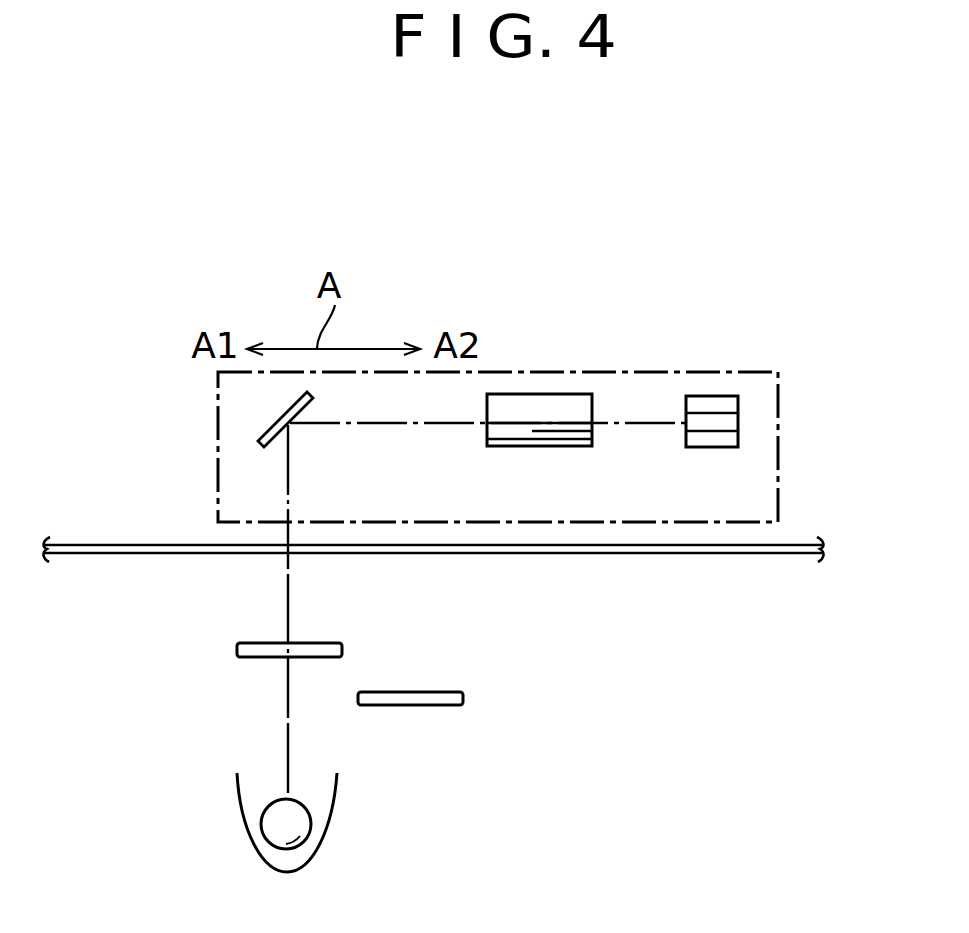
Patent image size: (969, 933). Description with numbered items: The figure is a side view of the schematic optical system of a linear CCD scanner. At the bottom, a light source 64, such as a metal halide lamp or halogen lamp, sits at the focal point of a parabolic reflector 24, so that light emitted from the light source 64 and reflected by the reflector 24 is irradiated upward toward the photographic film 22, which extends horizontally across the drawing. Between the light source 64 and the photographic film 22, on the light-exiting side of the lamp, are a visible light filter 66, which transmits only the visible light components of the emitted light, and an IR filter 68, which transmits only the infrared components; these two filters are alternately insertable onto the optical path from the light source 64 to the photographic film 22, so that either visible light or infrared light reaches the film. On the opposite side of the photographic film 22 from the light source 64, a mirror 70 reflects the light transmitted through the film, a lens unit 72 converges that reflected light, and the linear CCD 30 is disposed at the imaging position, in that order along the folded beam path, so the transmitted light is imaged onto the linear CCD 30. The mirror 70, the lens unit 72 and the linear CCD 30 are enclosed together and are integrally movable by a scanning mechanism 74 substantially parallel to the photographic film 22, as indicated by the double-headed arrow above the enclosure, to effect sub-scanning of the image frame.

The scanning mechanism 74 is at (507, 360).
The lens unit 72 is at (540, 405).
The linear CCD 30 is at (708, 397).
The mirror 70 is at (273, 423).
The photographic film 22 is at (595, 553).
The visible light filter 66 is at (263, 642).
The IR filter 68 is at (428, 690).
The light source 64 is at (310, 817).
The parabolic reflector 24 is at (298, 872).